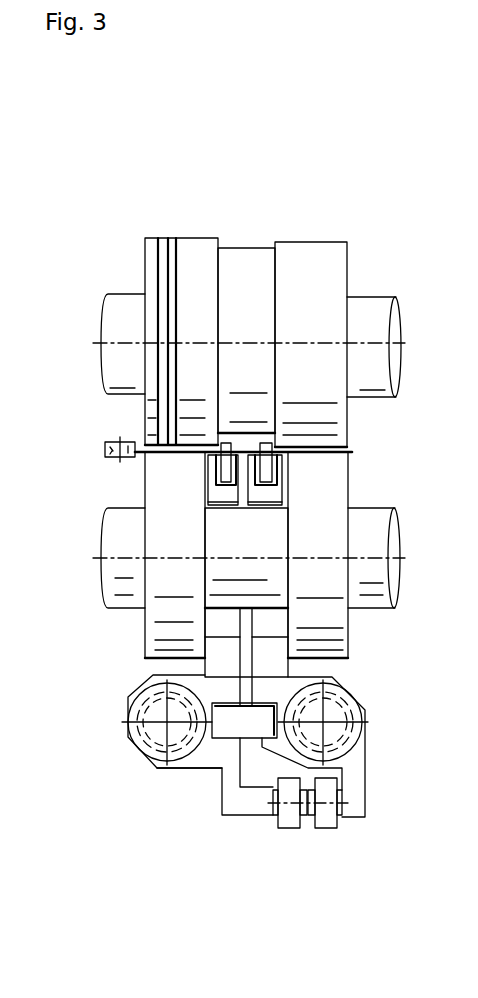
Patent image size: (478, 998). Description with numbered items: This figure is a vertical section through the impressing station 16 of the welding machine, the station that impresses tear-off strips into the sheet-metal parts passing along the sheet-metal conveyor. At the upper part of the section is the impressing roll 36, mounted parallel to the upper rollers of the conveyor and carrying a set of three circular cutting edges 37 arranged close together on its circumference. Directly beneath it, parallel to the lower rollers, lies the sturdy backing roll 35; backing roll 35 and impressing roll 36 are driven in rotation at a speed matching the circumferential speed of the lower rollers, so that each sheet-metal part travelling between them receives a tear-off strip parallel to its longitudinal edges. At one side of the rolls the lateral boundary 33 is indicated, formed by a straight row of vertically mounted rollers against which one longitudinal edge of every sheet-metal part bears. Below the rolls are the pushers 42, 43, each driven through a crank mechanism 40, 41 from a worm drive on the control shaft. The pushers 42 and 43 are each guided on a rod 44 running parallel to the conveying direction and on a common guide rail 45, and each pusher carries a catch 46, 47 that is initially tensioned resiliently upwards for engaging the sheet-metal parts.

The impressing station 16 is at (72, 233).
The lateral boundary 33 is at (105, 449).
The backing roll 35 is at (342, 628).
The impressing roll 36 is at (317, 248).
The circular cutting edges 37 is at (174, 238).
The crank mechanism 40 is at (323, 835).
The crank mechanism 41 is at (285, 835).
The pusher 42 is at (357, 770).
The pusher 43 is at (198, 758).
The rod 44 is at (150, 730).
The guide rail 45 is at (237, 730).
The catch 46 is at (267, 465).
The catch 47 is at (228, 463).